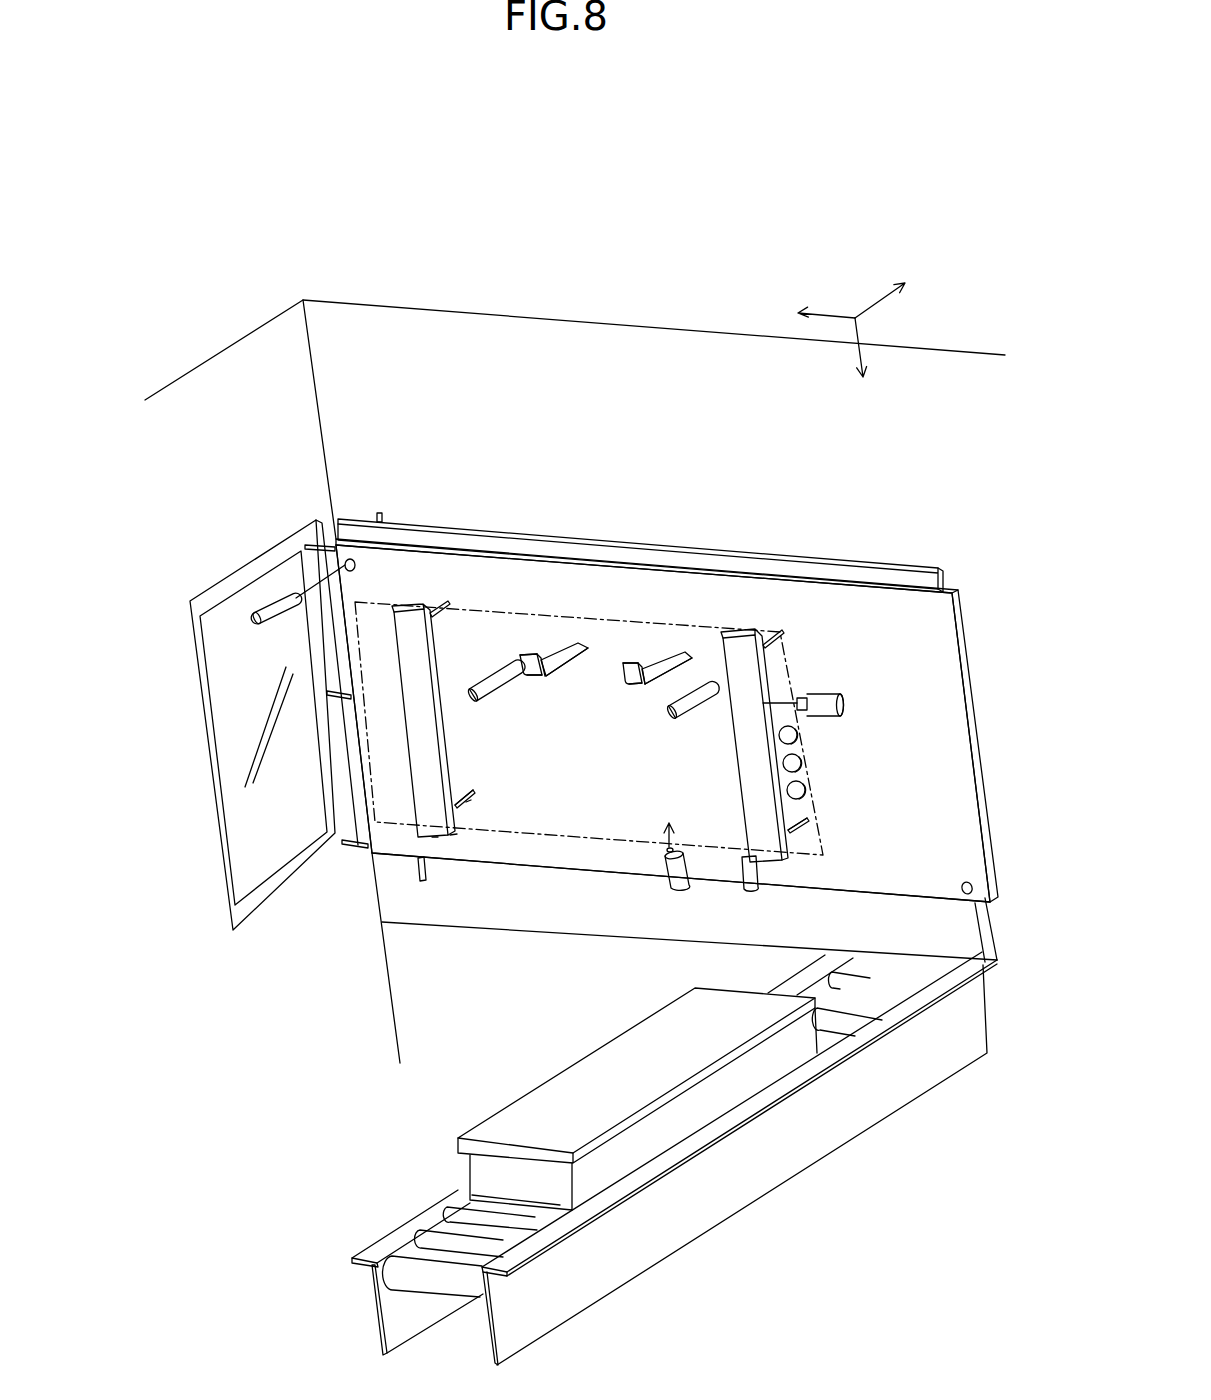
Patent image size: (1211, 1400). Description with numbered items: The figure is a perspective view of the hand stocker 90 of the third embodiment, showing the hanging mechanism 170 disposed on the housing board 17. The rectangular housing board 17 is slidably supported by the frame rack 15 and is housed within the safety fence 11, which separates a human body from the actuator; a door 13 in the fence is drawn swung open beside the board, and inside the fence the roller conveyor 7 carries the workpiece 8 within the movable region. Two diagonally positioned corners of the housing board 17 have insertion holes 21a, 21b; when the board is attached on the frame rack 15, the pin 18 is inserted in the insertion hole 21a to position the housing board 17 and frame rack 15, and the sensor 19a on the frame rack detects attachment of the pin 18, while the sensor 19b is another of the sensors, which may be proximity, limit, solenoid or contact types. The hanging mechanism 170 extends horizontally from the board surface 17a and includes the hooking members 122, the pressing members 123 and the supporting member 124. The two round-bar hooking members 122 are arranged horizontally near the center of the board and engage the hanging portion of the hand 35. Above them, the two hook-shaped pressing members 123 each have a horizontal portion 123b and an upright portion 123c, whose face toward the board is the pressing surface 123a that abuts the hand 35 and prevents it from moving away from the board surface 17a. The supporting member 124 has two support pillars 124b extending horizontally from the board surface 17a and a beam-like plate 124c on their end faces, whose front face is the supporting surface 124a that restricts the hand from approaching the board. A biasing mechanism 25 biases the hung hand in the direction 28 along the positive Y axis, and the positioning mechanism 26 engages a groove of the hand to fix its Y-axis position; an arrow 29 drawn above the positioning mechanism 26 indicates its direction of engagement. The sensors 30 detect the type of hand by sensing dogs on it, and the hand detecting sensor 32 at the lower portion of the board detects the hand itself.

The roller conveyor 7 is at (415, 1213).
The workpiece 8 is at (543, 1090).
The safety fence 11 is at (388, 320).
The door 13 is at (295, 540).
The frame rack 15 is at (856, 560).
The housing board 17 is at (645, 568).
The board surface 17a is at (562, 588).
The pin 18 is at (260, 610).
The sensor 19a is at (381, 515).
The sensor 19b is at (416, 873).
The insertion hole 21a is at (351, 559).
The insertion hole 21b is at (973, 886).
The biasing mechanism 25 is at (830, 694).
The positioning mechanism 26 is at (666, 883).
The direction 28 is at (775, 698).
The moving direction 29 is at (665, 845).
The sensors 30 is at (799, 733).
The hand detecting sensor 32 is at (760, 888).
The hand 35 is at (727, 616).
The hand stocker 90 is at (991, 290).
The hooking member 122 is at (500, 690).
The pressing member 123 is at (571, 644).
The pressing surface 123a is at (523, 653).
The horizontal portion 123b is at (572, 663).
The upright portion 123c is at (628, 687).
The supporting member 124 is at (794, 831).
The supporting surface 124a is at (435, 838).
The support pillars 124b is at (471, 803).
The plate 124c is at (455, 835).
The hanging mechanism 170 is at (508, 653).